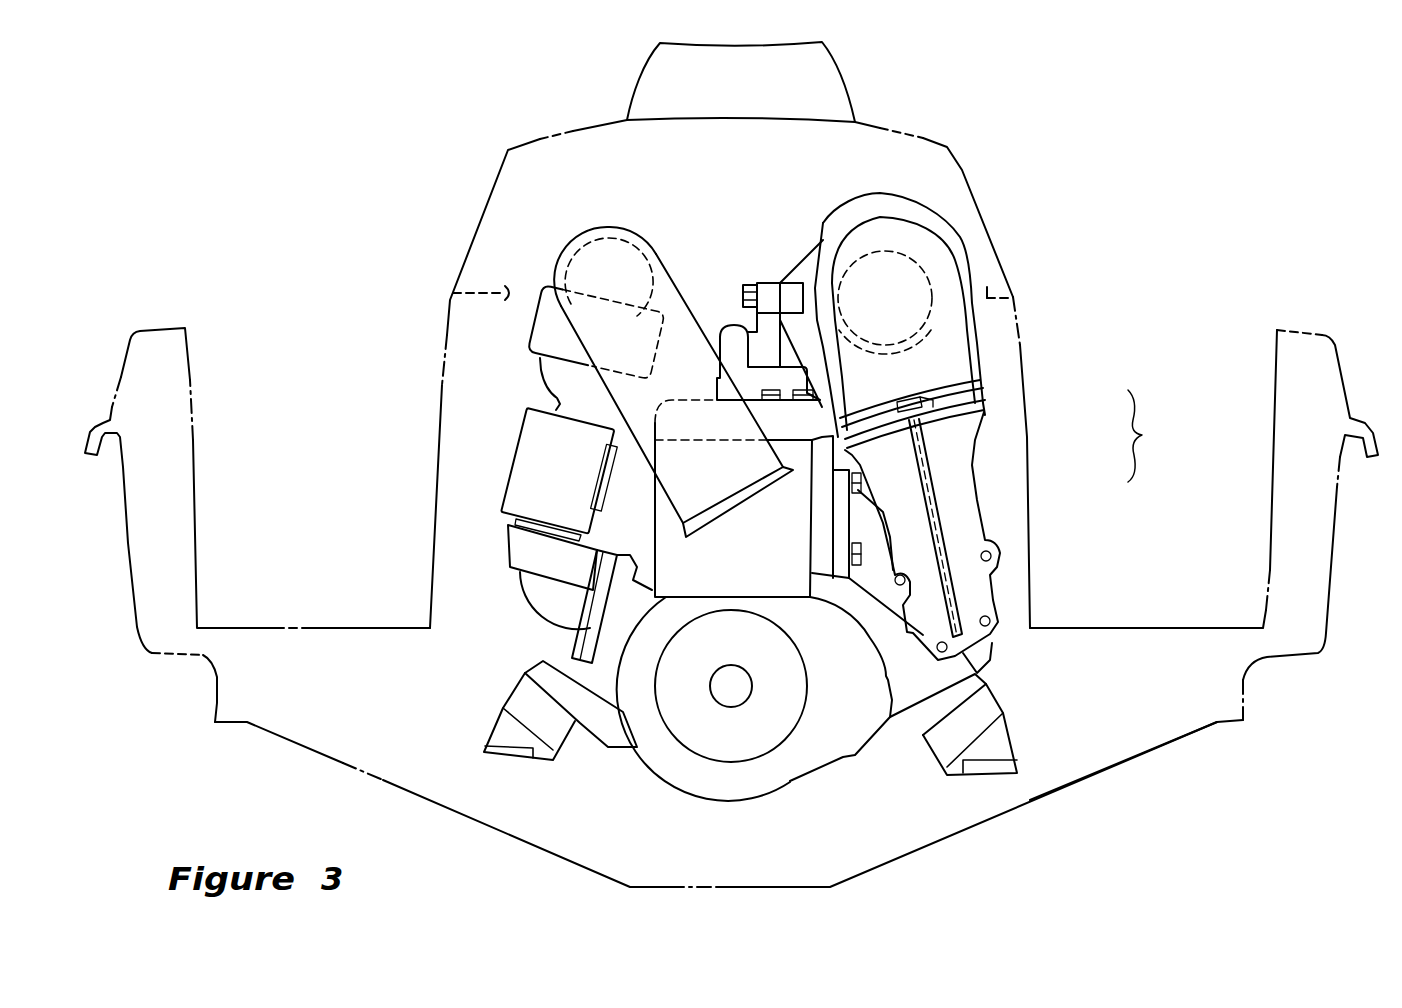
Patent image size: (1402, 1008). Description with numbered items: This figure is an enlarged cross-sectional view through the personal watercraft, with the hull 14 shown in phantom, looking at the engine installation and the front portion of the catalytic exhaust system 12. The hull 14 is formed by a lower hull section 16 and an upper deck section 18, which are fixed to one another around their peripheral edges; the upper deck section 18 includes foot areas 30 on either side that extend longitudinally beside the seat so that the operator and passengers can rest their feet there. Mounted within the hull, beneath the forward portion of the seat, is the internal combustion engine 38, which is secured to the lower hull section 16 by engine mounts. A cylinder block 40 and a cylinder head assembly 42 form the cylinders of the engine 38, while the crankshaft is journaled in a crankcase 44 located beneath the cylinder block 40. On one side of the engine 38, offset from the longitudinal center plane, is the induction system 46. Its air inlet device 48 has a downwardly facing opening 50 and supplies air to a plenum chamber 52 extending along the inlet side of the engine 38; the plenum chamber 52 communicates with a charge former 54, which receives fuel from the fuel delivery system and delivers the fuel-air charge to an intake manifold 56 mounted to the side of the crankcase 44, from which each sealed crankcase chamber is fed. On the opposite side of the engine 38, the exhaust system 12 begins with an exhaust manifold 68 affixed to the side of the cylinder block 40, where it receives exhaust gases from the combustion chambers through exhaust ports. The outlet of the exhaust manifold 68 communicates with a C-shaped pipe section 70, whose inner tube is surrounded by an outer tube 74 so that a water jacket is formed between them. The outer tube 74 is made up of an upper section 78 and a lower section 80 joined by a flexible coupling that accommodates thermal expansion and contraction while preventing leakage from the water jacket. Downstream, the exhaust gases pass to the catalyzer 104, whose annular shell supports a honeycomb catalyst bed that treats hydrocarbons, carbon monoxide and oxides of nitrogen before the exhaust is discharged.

The catalytic exhaust system 12 is at (964, 335).
The hull 14 is at (1050, 801).
The lower hull section 16 is at (1153, 750).
The upper deck section 18 is at (480, 210).
The foot areas 30 is at (335, 628).
The internal combustion engine 38 is at (646, 770).
The cylinder block 40 is at (755, 578).
The cylinder head assembly 42 is at (790, 412).
The crankcase 44 is at (699, 771).
The induction system 46 is at (499, 489).
The air inlet device 48 is at (675, 285).
The downwardly facing opening 50 is at (743, 503).
The plenum chamber 52 is at (530, 328).
The charge former 54 is at (515, 437).
The intake manifold 56 is at (546, 597).
The exhaust manifold 68 is at (873, 578).
The C-shaped pipe section 70 is at (925, 252).
The outer tube 74 is at (1156, 436).
The upper section 78 is at (953, 472).
The lower section 80 is at (967, 378).
The catalyzer 104 is at (917, 355).